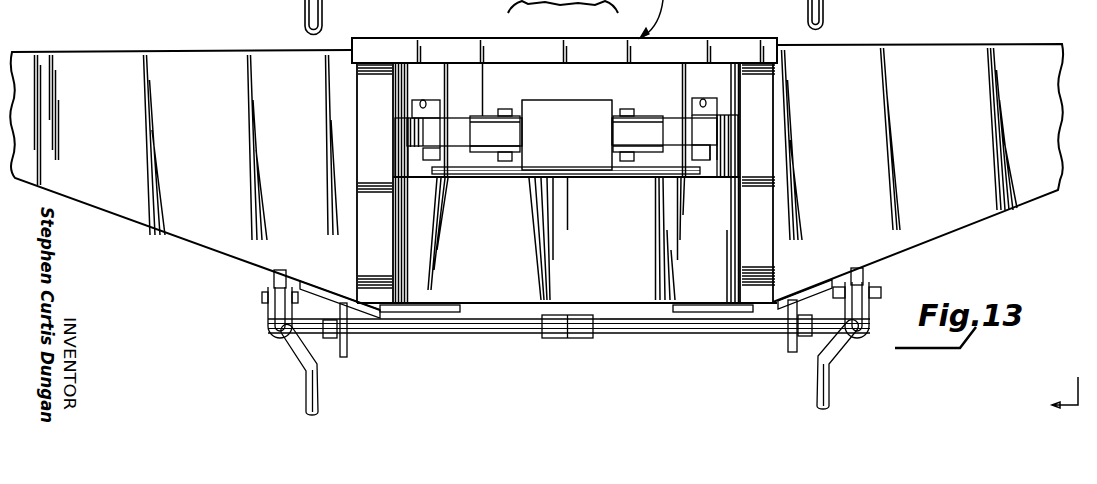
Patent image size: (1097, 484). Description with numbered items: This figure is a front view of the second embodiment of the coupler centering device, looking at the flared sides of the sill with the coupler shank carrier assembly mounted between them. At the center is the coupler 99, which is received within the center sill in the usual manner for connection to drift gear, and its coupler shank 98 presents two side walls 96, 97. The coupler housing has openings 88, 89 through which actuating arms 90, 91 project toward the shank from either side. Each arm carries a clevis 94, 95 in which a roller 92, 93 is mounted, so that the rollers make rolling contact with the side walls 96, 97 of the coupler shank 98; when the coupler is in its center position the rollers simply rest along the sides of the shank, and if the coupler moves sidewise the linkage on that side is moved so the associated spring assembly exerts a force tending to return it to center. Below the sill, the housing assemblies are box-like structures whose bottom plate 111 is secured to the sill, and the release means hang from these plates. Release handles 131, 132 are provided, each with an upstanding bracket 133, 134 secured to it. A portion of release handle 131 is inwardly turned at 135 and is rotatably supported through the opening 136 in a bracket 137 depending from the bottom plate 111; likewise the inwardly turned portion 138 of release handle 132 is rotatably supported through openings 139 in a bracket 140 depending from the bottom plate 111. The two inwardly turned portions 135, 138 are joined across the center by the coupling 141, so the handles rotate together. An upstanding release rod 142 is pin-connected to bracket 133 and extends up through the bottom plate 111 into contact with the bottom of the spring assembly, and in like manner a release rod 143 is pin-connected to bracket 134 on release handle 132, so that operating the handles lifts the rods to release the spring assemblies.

The opening 88 is at (421, 102).
The opening 89 is at (703, 102).
The actuating arm 90 is at (459, 114).
The actuating arm 91 is at (669, 114).
The roller 92 is at (522, 133).
The roller 93 is at (612, 133).
The clevis 94 is at (492, 117).
The clevis 95 is at (637, 115).
The side wall 96 is at (518, 164).
The side wall 97 is at (616, 164).
The coupler shank 98 is at (583, 106).
The coupler 99 is at (553, 101).
The bottom plate 111 is at (318, 283).
The release handle 131 is at (309, 393).
The release handle 132 is at (829, 392).
The upstanding bracket 133 is at (268, 318).
The upstanding bracket 134 is at (870, 310).
The inwardly turned portion 135 is at (455, 334).
The opening 136 is at (349, 341).
The bracket 137 is at (343, 311).
The inwardly turned portion 138 is at (692, 334).
The openings 139 is at (790, 338).
The bracket 140 is at (797, 306).
The coupling 141 is at (562, 329).
The release rod 142 is at (273, 280).
The release rod 143 is at (861, 276).